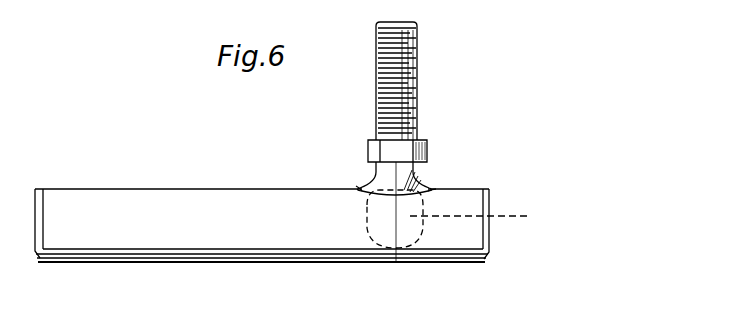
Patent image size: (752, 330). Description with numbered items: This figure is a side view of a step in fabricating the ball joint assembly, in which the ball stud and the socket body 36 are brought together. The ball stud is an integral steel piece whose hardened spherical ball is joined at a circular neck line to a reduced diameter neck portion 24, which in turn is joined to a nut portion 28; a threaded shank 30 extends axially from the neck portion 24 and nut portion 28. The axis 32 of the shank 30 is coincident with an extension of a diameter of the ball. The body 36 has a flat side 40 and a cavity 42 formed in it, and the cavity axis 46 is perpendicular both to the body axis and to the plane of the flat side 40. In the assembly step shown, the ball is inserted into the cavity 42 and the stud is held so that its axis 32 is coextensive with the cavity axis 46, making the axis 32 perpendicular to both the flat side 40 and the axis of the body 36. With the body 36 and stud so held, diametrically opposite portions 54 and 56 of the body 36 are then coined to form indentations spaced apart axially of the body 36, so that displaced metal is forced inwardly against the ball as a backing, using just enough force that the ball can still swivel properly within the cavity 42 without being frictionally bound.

The neck portion 24 is at (376, 168).
The nut portion 28 is at (371, 151).
The shank 30 is at (418, 80).
The axis of the shank 32 is at (410, 178).
The body 36 is at (172, 232).
The flat side 40 is at (117, 188).
The cavity 42 is at (484, 217).
The cavity axis 46 is at (410, 240).
The diametrically opposite portion 54 is at (364, 190).
The diametrically opposite portion 56 is at (432, 190).